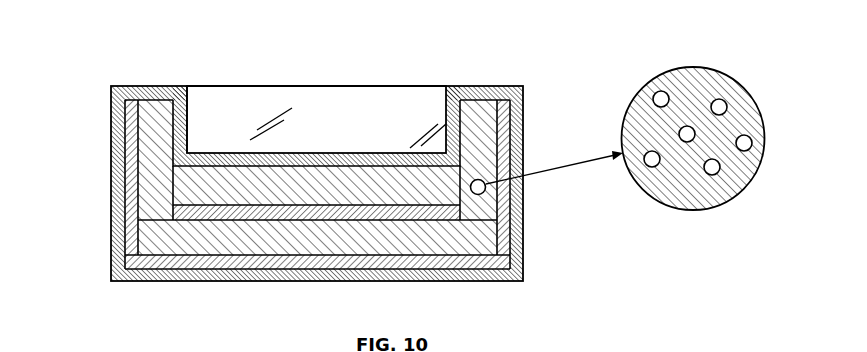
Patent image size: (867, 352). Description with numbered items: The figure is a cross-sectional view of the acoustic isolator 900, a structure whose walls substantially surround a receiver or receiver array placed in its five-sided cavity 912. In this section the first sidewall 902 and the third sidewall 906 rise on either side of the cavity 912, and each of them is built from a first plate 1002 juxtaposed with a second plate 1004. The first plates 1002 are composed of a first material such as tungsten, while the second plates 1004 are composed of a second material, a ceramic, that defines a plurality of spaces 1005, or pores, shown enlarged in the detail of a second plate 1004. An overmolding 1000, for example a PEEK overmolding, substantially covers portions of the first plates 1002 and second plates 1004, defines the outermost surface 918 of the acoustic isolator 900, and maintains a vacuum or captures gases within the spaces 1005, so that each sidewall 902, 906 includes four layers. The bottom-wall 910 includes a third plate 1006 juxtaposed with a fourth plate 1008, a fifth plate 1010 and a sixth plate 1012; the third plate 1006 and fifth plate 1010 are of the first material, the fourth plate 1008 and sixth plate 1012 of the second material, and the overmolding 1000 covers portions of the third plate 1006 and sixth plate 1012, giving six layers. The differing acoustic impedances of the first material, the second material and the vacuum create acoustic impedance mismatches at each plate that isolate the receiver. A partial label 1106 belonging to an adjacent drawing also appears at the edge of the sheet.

The acoustic isolator 900 is at (135, 73).
The first sidewall 902 is at (519, 134).
The third sidewall 906 is at (112, 135).
The bottom-wall 910 is at (297, 153).
The five-sided cavity 912 is at (407, 98).
The outermost surface 918 is at (395, 134).
The overmolding 1000 is at (183, 117).
The first plate 1002 is at (128, 108).
The second plate 1004 is at (152, 115).
The spaces 1005 is at (744, 143).
The third plate 1006 is at (365, 263).
The fourth plate 1008 is at (300, 238).
The fifth plate 1010 is at (268, 210).
The sixth plate 1012 is at (235, 187).
The element of FIG. 11 1106 is at (642, 350).